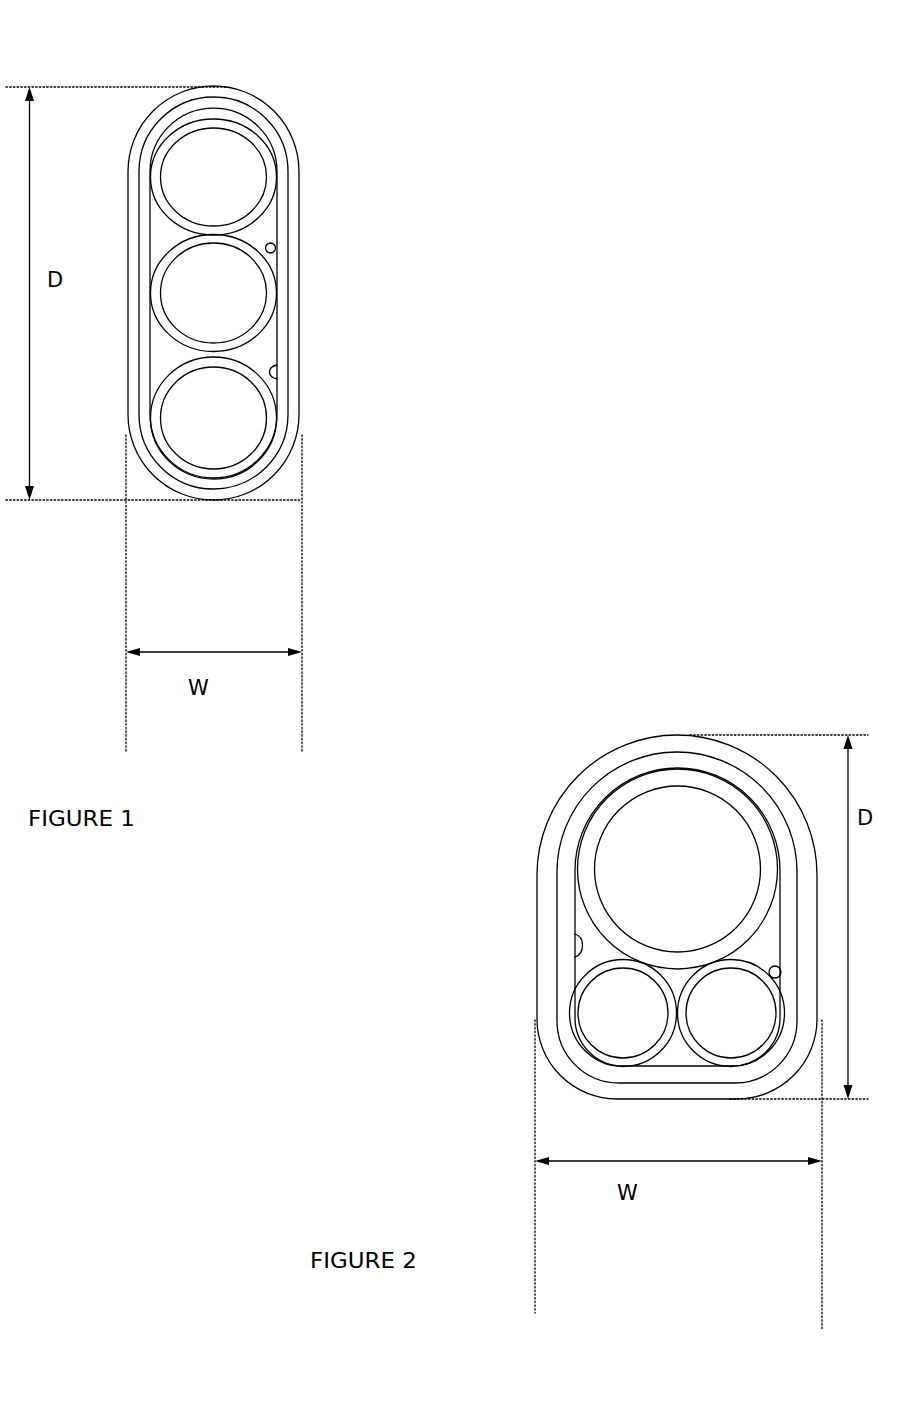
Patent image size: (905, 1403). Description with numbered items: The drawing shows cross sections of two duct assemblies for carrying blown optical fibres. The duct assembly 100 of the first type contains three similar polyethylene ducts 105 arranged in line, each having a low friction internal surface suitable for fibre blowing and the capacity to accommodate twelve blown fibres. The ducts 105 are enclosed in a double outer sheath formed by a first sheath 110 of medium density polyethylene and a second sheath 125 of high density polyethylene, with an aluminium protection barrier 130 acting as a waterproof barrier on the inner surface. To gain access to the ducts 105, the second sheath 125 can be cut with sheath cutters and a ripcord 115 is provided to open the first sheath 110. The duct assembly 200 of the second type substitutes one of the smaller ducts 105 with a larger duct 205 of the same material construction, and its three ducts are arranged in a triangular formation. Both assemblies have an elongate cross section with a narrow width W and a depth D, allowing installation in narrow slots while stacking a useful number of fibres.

In FIG. 1, the duct assembly 100 is at (242, 70).
In FIG. 1, the duct 105 is at (266, 143).
In FIG. 2, the duct 105 is at (575, 1005).
In FIG. 1, the first sheath 110 is at (285, 193).
In FIG. 2, the first sheath 110 is at (562, 883).
In FIG. 1, the ripcord 115 is at (275, 244).
In FIG. 1, the second sheath 125 is at (298, 336).
In FIG. 2, the second sheath 125 is at (563, 793).
In FIG. 1, the aluminium protection barrier 130 is at (277, 378).
In FIG. 2, the aluminium protection barrier 130 is at (573, 957).
In FIG. 2, the duct assembly 200 is at (673, 680).
In FIG. 2, the larger duct 205 is at (627, 783).